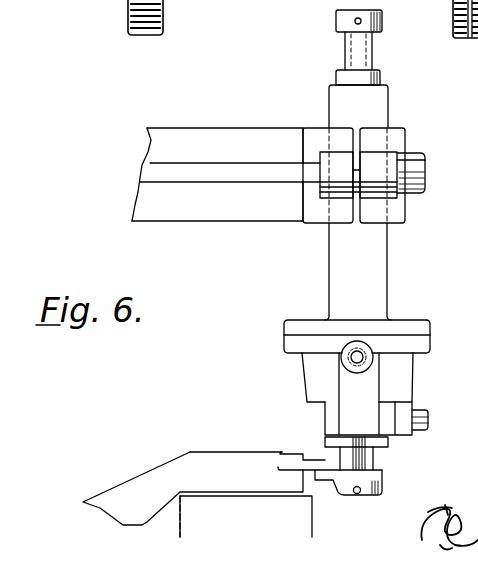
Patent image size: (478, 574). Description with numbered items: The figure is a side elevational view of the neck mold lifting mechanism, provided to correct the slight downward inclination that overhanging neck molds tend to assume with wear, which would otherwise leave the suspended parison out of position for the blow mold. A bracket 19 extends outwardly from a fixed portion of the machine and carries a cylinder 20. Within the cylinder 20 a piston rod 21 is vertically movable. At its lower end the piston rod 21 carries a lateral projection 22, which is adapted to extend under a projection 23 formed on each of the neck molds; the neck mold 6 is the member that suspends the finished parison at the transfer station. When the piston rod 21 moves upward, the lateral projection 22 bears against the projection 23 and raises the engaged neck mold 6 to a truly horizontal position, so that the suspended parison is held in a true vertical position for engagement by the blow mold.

The neck mold 6 is at (220, 462).
The bracket 19 is at (236, 121).
The cylinder 20 is at (400, 373).
The piston rod 21 is at (370, 458).
The lateral projection 22 is at (345, 473).
The projection 23 is at (305, 465).